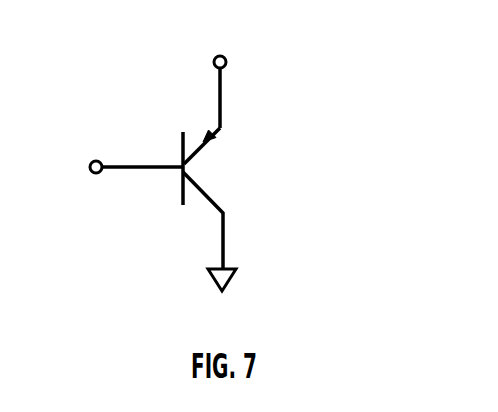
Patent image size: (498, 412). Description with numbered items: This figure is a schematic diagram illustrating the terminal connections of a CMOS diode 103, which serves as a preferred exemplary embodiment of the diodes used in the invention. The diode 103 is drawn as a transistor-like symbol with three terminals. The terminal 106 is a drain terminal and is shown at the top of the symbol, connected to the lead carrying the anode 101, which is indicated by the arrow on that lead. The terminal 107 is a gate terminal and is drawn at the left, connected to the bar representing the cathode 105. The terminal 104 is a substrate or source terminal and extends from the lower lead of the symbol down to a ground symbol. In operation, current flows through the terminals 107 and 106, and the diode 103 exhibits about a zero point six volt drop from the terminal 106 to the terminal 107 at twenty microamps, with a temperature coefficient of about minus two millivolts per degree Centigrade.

The diode 103 is at (245, 173).
The terminal 106 is at (222, 100).
The anode 101 is at (224, 131).
The cathode 105 is at (201, 146).
The terminal 107 is at (133, 175).
The terminal 104 is at (226, 268).